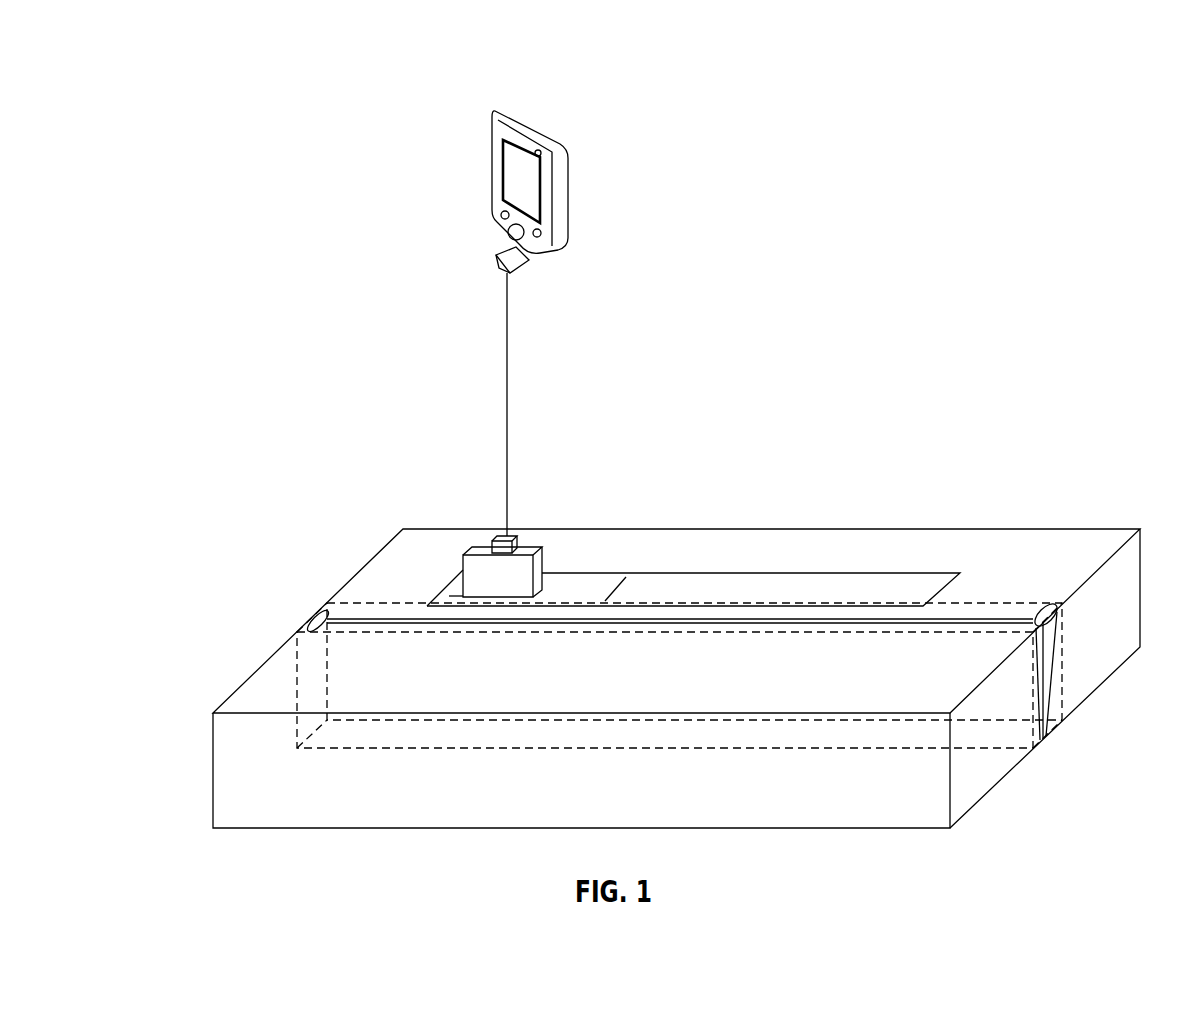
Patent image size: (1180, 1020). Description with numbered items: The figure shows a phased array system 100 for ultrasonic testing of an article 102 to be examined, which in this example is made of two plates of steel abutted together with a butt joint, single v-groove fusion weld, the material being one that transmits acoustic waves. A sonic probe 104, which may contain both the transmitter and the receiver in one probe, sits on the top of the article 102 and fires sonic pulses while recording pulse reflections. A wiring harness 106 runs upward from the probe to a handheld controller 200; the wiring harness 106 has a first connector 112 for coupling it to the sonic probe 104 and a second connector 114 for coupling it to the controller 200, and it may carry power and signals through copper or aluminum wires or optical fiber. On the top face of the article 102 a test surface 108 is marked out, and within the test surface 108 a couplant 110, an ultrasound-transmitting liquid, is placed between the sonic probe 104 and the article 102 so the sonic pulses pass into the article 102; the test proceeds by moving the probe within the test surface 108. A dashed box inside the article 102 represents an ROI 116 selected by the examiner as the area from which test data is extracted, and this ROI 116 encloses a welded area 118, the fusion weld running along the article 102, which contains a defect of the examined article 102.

The phased array system 100 is at (383, 84).
The article 102 is at (372, 578).
The sonic probe 104 is at (483, 548).
The wiring harness 106 is at (507, 402).
The test surface 108 is at (920, 572).
The couplant 110 is at (628, 580).
The first connector 112 is at (520, 538).
The second connector 114 is at (527, 270).
The region of interest (ROI) 116 is at (295, 683).
The welded area 118 is at (1052, 693).
The controller 200 is at (541, 123).